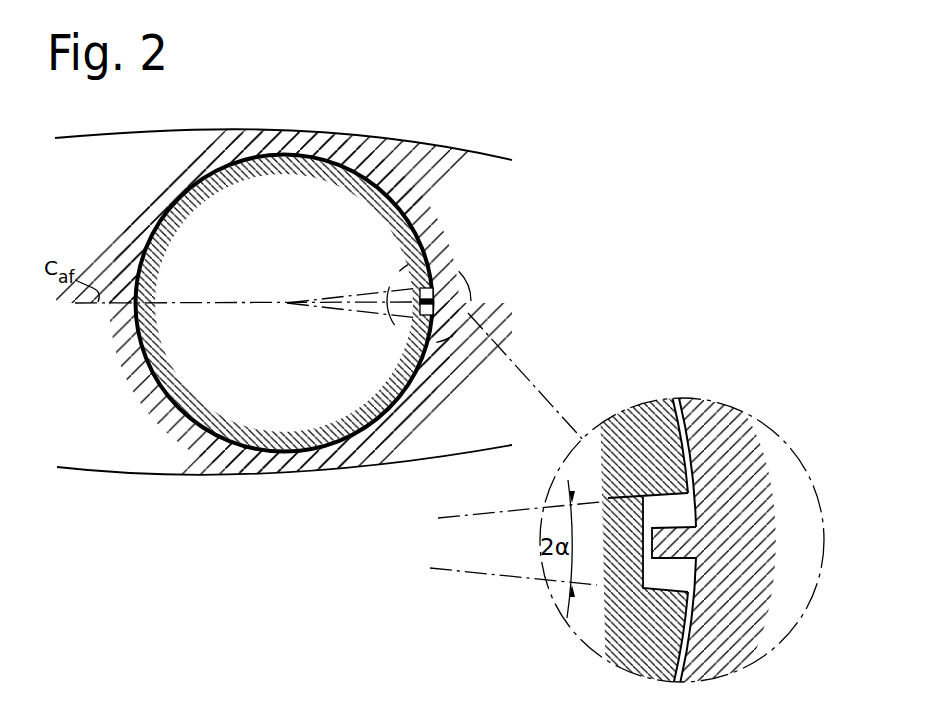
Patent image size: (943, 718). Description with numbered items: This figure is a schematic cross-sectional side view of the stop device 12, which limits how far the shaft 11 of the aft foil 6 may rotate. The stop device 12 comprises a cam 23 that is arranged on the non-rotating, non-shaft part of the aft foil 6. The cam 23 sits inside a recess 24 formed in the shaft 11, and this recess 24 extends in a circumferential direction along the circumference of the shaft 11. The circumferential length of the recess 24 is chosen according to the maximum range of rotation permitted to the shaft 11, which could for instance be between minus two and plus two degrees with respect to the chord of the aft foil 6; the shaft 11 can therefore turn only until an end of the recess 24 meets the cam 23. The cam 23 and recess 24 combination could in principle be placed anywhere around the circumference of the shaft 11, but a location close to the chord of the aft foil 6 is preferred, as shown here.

The aft foil 6 is at (138, 474).
The shaft 11 is at (290, 432).
The stop device 12 is at (437, 300).
The cam 23 is at (683, 543).
The recess 24 is at (658, 577).